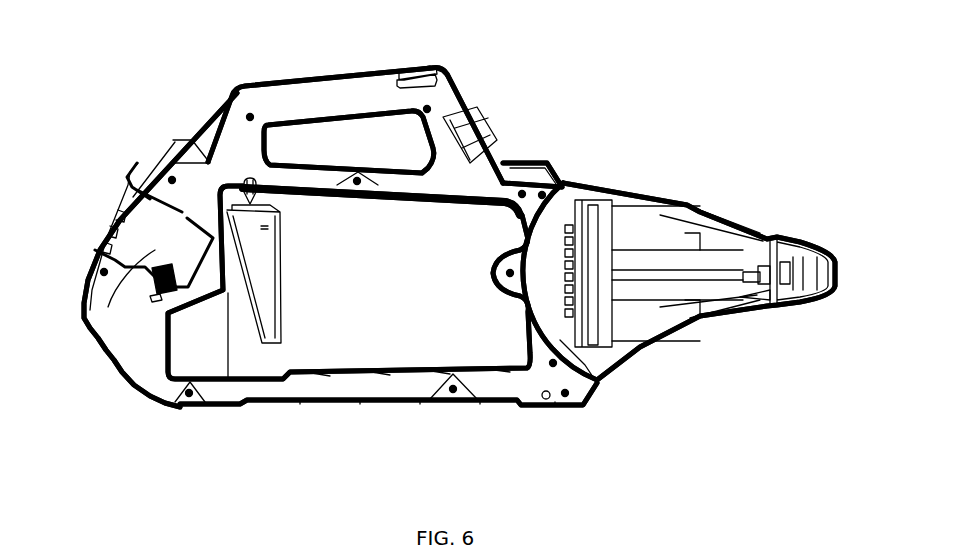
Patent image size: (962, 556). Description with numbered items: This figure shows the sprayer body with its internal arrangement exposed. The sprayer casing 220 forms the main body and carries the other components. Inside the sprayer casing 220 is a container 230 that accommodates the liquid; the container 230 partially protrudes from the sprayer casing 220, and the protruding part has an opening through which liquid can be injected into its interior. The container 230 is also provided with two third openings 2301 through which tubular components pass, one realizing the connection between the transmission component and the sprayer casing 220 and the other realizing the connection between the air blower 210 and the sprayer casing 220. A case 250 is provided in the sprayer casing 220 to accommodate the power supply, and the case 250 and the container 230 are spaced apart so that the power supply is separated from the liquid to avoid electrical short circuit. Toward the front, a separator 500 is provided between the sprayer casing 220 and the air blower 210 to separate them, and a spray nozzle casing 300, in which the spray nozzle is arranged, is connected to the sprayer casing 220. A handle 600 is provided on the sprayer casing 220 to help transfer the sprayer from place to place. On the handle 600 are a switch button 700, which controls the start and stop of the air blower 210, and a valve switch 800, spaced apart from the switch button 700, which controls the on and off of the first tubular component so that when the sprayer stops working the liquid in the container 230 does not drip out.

The handle 600 is at (363, 74).
The switch button 700 is at (437, 70).
The valve switch 800 is at (488, 128).
The third opening 2301 is at (251, 178).
The container 230 is at (540, 168).
The case 250 is at (93, 318).
The sprayer casing 220 is at (353, 405).
The separator 500 is at (577, 375).
The air blower 210 is at (700, 328).
The spray nozzle casing 300 is at (827, 300).